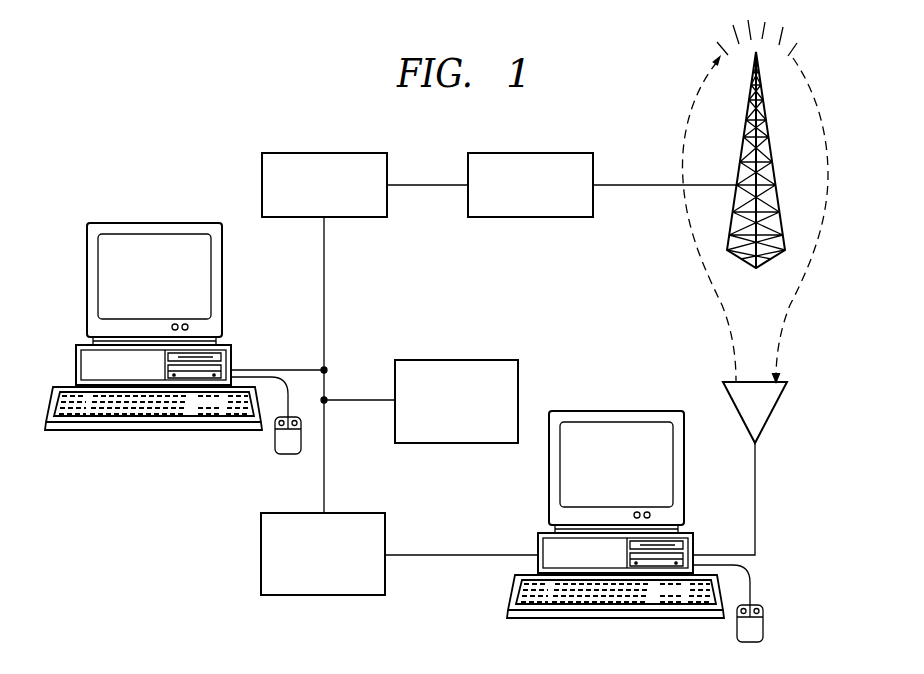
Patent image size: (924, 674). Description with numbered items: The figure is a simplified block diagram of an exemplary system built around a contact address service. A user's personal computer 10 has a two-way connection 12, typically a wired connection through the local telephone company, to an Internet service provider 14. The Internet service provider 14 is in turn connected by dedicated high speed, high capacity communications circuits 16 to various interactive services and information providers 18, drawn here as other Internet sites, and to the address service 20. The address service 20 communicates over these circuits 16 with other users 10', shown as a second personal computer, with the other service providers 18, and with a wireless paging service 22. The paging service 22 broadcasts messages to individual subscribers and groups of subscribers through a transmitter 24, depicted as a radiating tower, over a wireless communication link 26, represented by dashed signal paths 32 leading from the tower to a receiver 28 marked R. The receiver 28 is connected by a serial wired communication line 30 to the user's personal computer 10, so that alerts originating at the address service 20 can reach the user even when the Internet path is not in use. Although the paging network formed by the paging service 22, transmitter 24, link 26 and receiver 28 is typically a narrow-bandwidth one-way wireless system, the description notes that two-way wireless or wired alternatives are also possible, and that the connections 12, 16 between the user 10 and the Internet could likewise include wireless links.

The user's personal computer 10 is at (635, 501).
The other users 10' is at (173, 354).
The two-way connection 12 is at (456, 554).
The Internet service provider 14 is at (261, 555).
The dedicated high speed high capacity communications circuits 16 is at (428, 181).
The interactive services and information providers 18 is at (460, 360).
The address service 20 is at (323, 153).
The wireless paging service 22 is at (530, 153).
The transmitter 24 is at (773, 165).
The wireless communication link 26 is at (826, 133).
The receiver 28 is at (773, 410).
The serial wired communication line 30 is at (756, 500).
The transmitted signal 32 is at (700, 258).